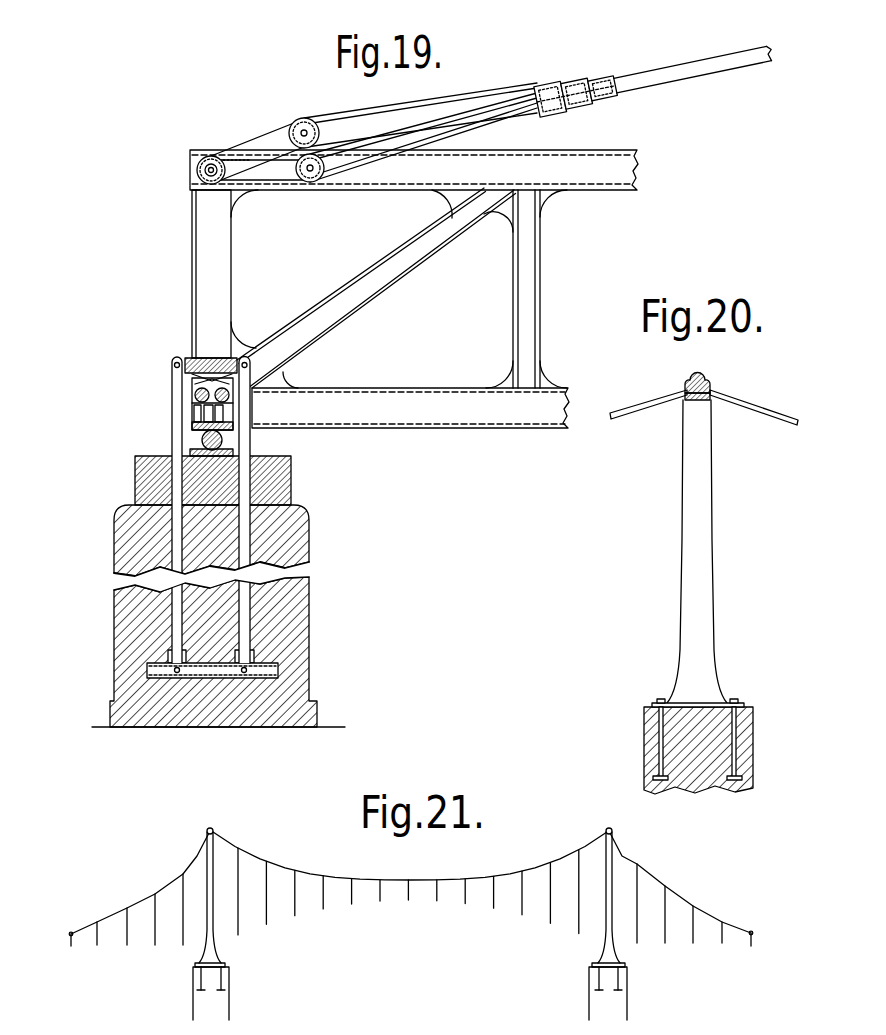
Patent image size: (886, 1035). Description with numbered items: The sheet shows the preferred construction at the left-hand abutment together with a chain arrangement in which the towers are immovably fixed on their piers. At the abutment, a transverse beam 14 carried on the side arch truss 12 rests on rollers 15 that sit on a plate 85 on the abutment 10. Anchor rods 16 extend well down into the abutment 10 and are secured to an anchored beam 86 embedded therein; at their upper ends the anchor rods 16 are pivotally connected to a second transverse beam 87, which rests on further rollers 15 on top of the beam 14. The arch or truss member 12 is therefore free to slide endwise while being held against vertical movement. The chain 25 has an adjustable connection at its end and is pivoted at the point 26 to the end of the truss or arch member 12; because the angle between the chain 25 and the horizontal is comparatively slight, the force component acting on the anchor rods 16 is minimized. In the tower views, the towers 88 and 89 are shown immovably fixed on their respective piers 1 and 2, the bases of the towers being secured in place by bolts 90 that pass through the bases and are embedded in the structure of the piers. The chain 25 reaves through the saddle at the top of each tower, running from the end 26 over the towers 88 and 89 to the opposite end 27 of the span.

In FIG. 20, the pier 1 is at (750, 745).
In FIG. 21, the pier 1 is at (218, 1005).
In FIG. 21, the pier 2 is at (620, 1000).
In FIG. 19, the abutment 10 is at (120, 602).
In FIG. 19, the side arch truss 12 is at (405, 410).
In FIG. 19, the transverse beam 14 is at (198, 412).
In FIG. 19, the rollers 15 is at (198, 392).
In FIG. 19, the anchor rods 16 is at (176, 518).
In FIG. 19, the chain 25 is at (661, 78).
In FIG. 20, the chain 25 is at (643, 408).
In FIG. 21, the chain 25 is at (285, 864).
In FIG. 19, the pivot point 26 is at (197, 170).
In FIG. 21, the pivot point 26 is at (71, 932).
In FIG. 21, the cable anchorage end 27 is at (753, 931).
In FIG. 19, the plate 85 is at (196, 450).
In FIG. 19, the anchored beam 86 is at (153, 668).
In FIG. 19, the transverse beam 87 is at (212, 358).
In FIG. 20, the tower 88 is at (702, 572).
In FIG. 21, the tower 88 is at (213, 942).
In FIG. 21, the tower 89 is at (605, 934).
In FIG. 20, the bolts 90 is at (658, 700).
In FIG. 21, the bolts 90 is at (223, 983).